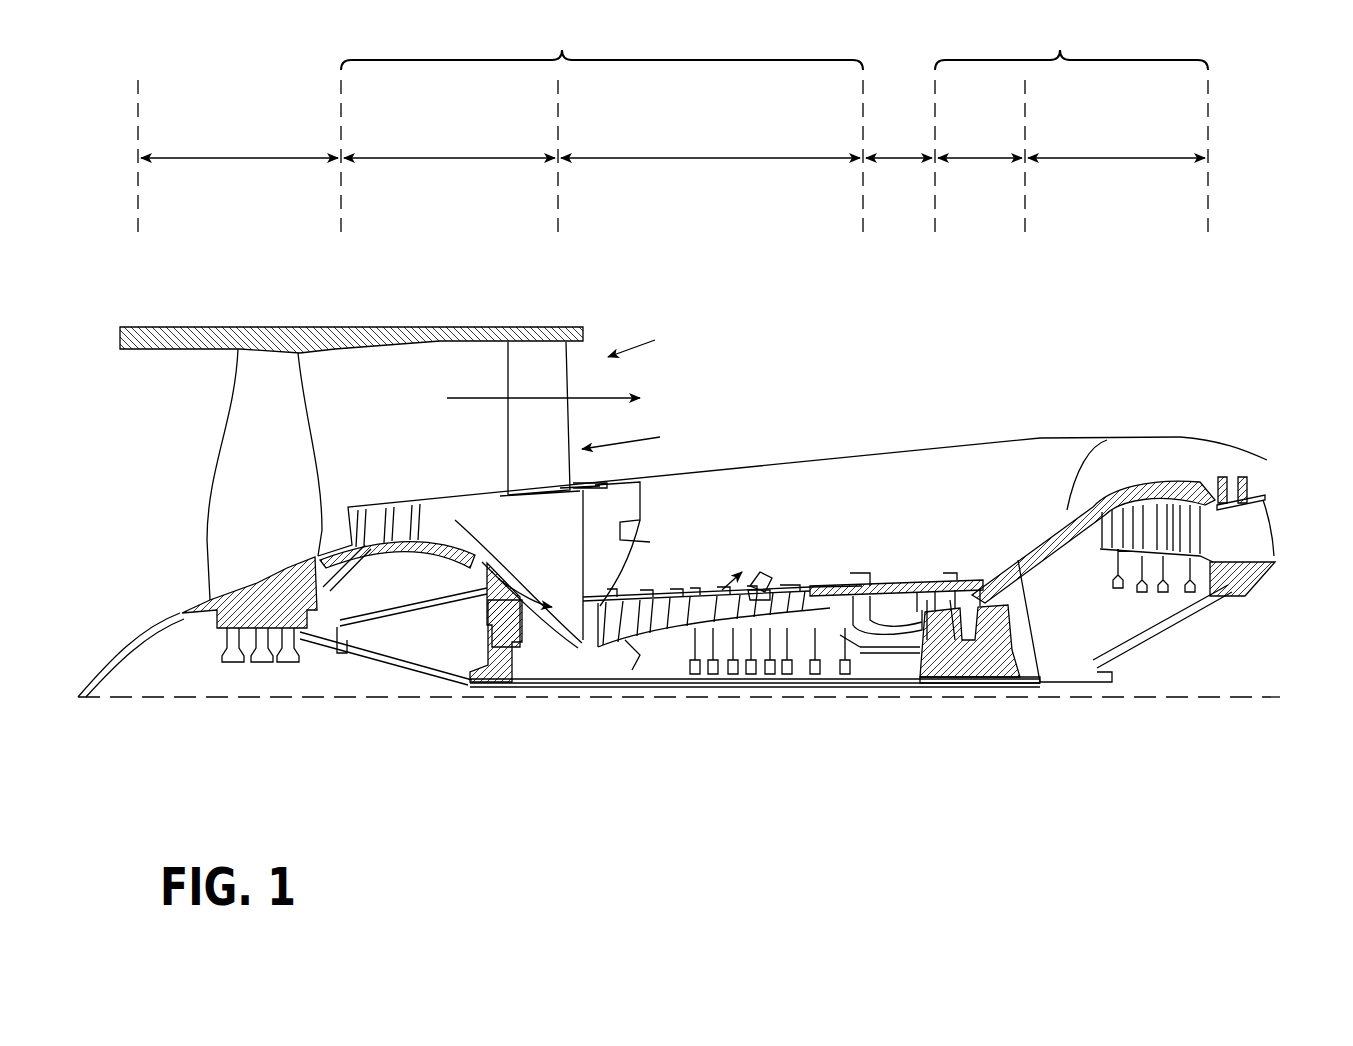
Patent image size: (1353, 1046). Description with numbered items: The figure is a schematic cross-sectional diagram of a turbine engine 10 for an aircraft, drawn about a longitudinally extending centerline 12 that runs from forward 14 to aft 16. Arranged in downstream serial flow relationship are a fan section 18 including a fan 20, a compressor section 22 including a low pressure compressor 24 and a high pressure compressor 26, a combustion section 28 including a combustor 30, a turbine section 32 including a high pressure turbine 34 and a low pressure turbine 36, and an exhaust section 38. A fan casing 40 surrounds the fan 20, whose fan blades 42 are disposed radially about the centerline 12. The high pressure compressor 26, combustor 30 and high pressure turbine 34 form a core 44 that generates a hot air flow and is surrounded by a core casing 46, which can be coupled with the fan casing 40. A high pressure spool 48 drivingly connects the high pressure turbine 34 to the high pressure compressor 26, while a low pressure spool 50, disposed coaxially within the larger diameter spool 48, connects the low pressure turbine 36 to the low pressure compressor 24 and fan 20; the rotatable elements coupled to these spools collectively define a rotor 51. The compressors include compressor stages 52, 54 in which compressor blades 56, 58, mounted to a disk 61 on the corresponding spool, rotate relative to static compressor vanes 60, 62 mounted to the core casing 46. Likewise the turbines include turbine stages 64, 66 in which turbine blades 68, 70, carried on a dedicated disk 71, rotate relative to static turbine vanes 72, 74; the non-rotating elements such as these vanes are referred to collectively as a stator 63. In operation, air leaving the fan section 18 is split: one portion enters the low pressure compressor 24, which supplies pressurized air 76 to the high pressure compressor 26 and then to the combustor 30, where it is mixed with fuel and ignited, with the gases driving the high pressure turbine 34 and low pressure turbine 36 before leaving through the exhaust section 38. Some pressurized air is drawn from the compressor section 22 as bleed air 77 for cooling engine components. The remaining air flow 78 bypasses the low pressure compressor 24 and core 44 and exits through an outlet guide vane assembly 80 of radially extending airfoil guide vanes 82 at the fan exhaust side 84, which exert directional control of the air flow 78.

The turbine engine 10 is at (888, 318).
The centerline 12 is at (238, 700).
The forward 14 is at (85, 462).
The aft 16 is at (1296, 546).
The fan section 18 is at (239, 143).
The fan 20 is at (178, 536).
The compressor section 22 is at (602, 44).
The low pressure compressor 24 is at (449, 143).
The high pressure compressor 26 is at (710, 143).
The combustion section 28 is at (899, 137).
The combustor 30 is at (900, 603).
The turbine section 32 is at (1071, 44).
The high pressure turbine 34 is at (980, 143).
The low pressure turbine 36 is at (1116, 143).
The exhaust section 38 is at (1280, 504).
The fan casing 40 is at (385, 326).
The fan blades 42 is at (295, 408).
The core 44 is at (845, 500).
The core casing 46 is at (1075, 510).
The HP shaft or spool 48 is at (870, 660).
The LP shaft or spool 50 is at (490, 686).
The rotor 51 is at (748, 692).
The compressor stages 52 is at (402, 446).
The compressor stages 54 is at (697, 493).
The compressor blades 56 is at (378, 514).
The compressor blades 58 is at (620, 600).
The static compressor vanes 60 is at (360, 514).
The disk 61 is at (358, 553).
The static compressor vanes 62 is at (630, 590).
The stator 63 is at (1137, 480).
The turbine stages 64 is at (1003, 528).
The turbine stages 66 is at (1190, 380).
The turbine blades 68 is at (950, 600).
The turbine blades 70 is at (1193, 497).
The disk 71 is at (955, 680).
The static turbine vanes 72 is at (927, 600).
The static turbine vanes 74 is at (1176, 497).
The pressurized air 76 is at (560, 575).
The bleed air 77 is at (746, 571).
The air flow 78 is at (473, 398).
The outlet guide vane assembly 80 is at (640, 437).
The airfoil guide vanes 82 is at (520, 437).
The fan exhaust side 84 is at (648, 340).